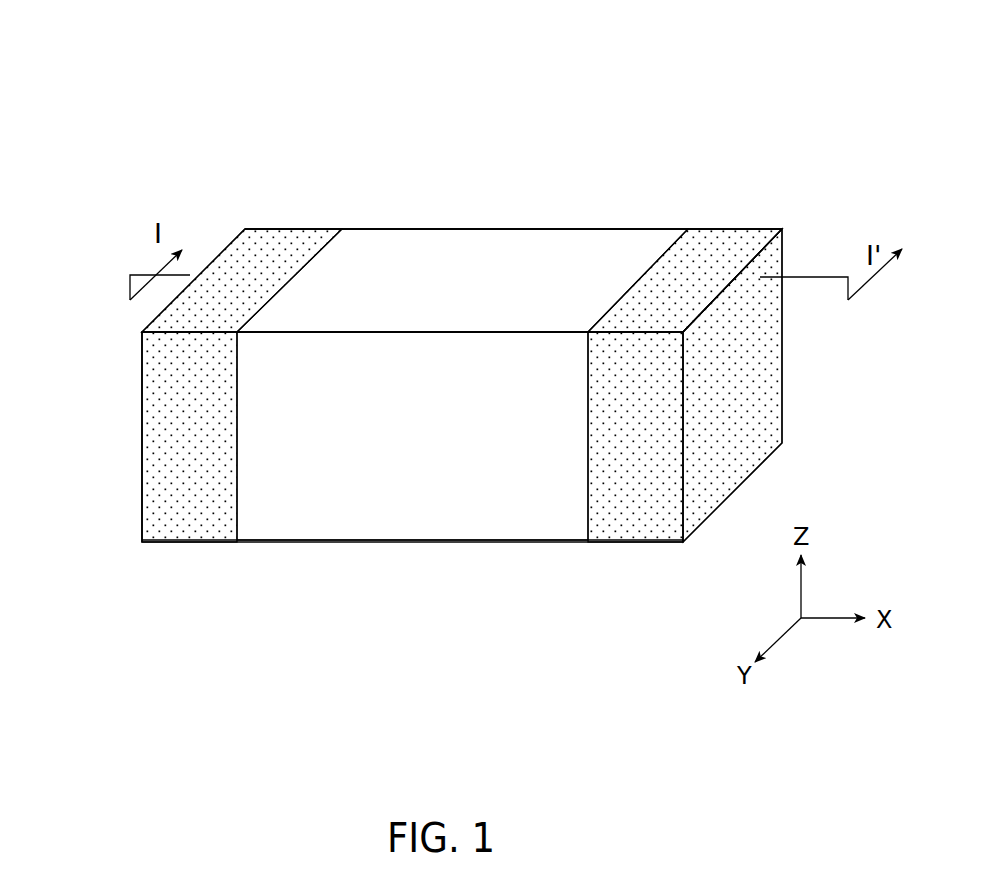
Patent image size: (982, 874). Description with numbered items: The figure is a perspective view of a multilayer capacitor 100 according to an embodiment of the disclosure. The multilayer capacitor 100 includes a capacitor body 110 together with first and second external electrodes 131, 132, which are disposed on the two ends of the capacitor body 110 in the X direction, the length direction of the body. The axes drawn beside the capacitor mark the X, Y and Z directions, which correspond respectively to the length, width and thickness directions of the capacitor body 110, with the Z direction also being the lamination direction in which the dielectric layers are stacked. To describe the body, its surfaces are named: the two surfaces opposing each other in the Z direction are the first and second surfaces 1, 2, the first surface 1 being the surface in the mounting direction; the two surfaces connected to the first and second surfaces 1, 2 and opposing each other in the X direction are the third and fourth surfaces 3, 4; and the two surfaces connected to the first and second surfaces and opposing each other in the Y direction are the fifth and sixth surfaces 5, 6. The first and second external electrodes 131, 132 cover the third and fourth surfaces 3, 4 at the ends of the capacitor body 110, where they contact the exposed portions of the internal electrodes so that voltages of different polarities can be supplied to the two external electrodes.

The multilayer capacitor 100 is at (553, 44).
The capacitor body 110 is at (531, 257).
The first external electrode 131 is at (289, 224).
The second external electrode 132 is at (730, 228).
The first surface 1 is at (397, 510).
The second surface 2 is at (637, 252).
The third surface 3 is at (140, 430).
The fourth surface 4 is at (752, 386).
The fifth surface 5 is at (572, 507).
The sixth surface 6 is at (388, 228).